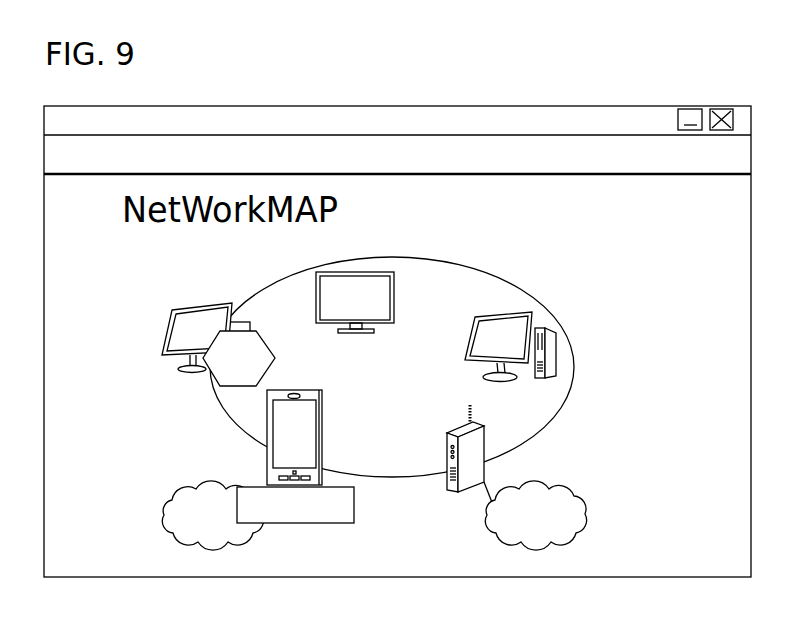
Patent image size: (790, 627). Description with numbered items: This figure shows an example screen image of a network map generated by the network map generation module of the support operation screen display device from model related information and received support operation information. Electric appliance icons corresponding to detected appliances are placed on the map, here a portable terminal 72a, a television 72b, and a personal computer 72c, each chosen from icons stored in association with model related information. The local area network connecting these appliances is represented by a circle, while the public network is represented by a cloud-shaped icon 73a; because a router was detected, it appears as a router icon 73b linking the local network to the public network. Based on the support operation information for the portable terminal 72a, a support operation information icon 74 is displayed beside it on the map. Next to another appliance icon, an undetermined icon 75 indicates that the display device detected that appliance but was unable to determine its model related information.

The portable terminal 72a is at (310, 390).
The television 72b is at (362, 272).
The personal computer 72c is at (520, 310).
The cloud-shaped icon 73a is at (213, 485).
The router icon 73b is at (497, 423).
The support operation information icon 74 is at (343, 486).
The undetermined icon 75 is at (265, 342).